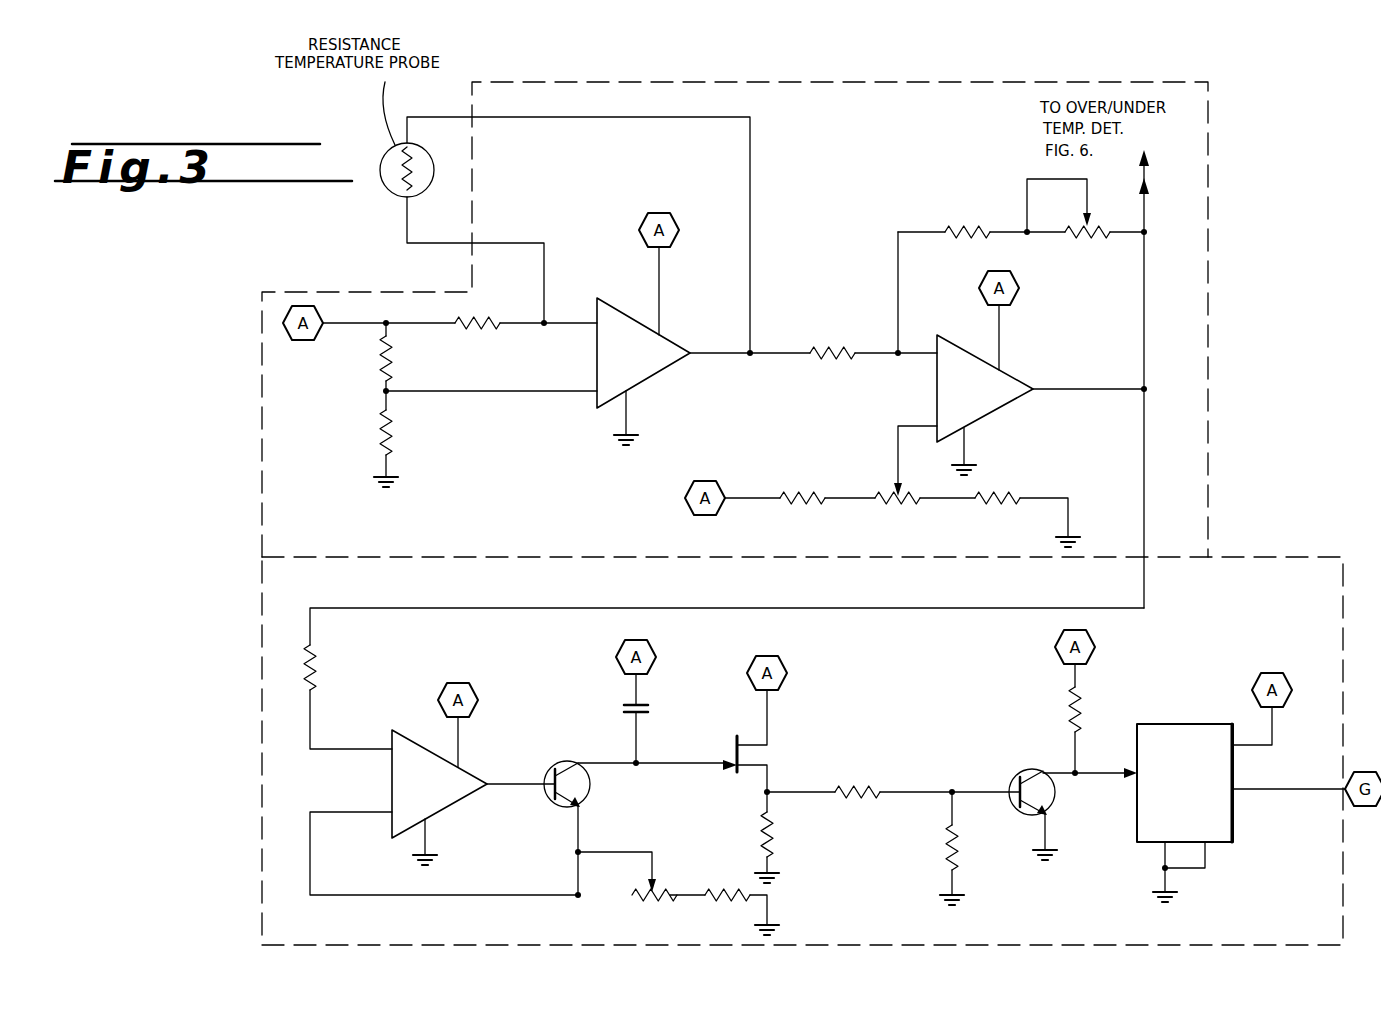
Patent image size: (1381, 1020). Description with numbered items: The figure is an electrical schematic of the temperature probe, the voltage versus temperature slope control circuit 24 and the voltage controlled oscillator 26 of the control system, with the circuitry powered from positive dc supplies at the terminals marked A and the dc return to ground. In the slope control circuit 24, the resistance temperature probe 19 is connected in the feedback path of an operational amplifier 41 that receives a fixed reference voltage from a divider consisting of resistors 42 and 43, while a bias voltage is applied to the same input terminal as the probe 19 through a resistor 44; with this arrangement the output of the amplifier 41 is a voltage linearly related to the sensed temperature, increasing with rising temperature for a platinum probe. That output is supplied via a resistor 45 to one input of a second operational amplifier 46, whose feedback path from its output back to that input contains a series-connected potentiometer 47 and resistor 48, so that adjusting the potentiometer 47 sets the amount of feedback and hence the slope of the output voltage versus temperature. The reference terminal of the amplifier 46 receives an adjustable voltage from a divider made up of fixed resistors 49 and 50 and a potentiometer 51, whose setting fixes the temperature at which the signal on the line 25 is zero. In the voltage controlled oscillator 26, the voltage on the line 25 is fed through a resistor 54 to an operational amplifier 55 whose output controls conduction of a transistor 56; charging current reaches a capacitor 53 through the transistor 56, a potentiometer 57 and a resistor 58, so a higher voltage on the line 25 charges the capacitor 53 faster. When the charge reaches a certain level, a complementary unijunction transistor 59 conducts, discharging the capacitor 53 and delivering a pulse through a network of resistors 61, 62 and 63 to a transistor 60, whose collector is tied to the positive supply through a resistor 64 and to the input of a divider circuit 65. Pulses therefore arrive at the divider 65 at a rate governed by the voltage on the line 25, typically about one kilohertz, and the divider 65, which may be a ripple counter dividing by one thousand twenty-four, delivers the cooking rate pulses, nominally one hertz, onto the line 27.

The resistance temperature probe 19 is at (394, 196).
The slope control circuit 24 is at (735, 319).
The line 25 is at (1143, 474).
The voltage controlled oscillator 26 is at (802, 751).
The line 27 is at (1290, 792).
The operational amplifier 41 is at (618, 304).
The resistor 42 is at (381, 359).
The resistor 43 is at (381, 438).
The resistor 44 is at (490, 329).
The resistor 45 is at (832, 346).
The operational amplifier 46 is at (936, 392).
The potentiometer 47 is at (1096, 242).
The resistor 48 is at (964, 226).
The fixed resistor 49 is at (806, 492).
The fixed resistor 50 is at (1014, 492).
The potentiometer 51 is at (884, 492).
The capacitor 53 is at (652, 707).
The resistor 54 is at (318, 669).
The operational amplifier 55 is at (406, 738).
The transistor 56 is at (550, 770).
The potentiometer 57 is at (650, 902).
The resistor 58 is at (720, 888).
The complementary unijunction transistor 59 is at (768, 755).
The transistor 60 is at (1020, 775).
The resistor 61 is at (770, 838).
The resistor 62 is at (860, 800).
The resistor 63 is at (946, 861).
The resistor 64 is at (1066, 710).
The divider circuit 65 is at (1190, 724).